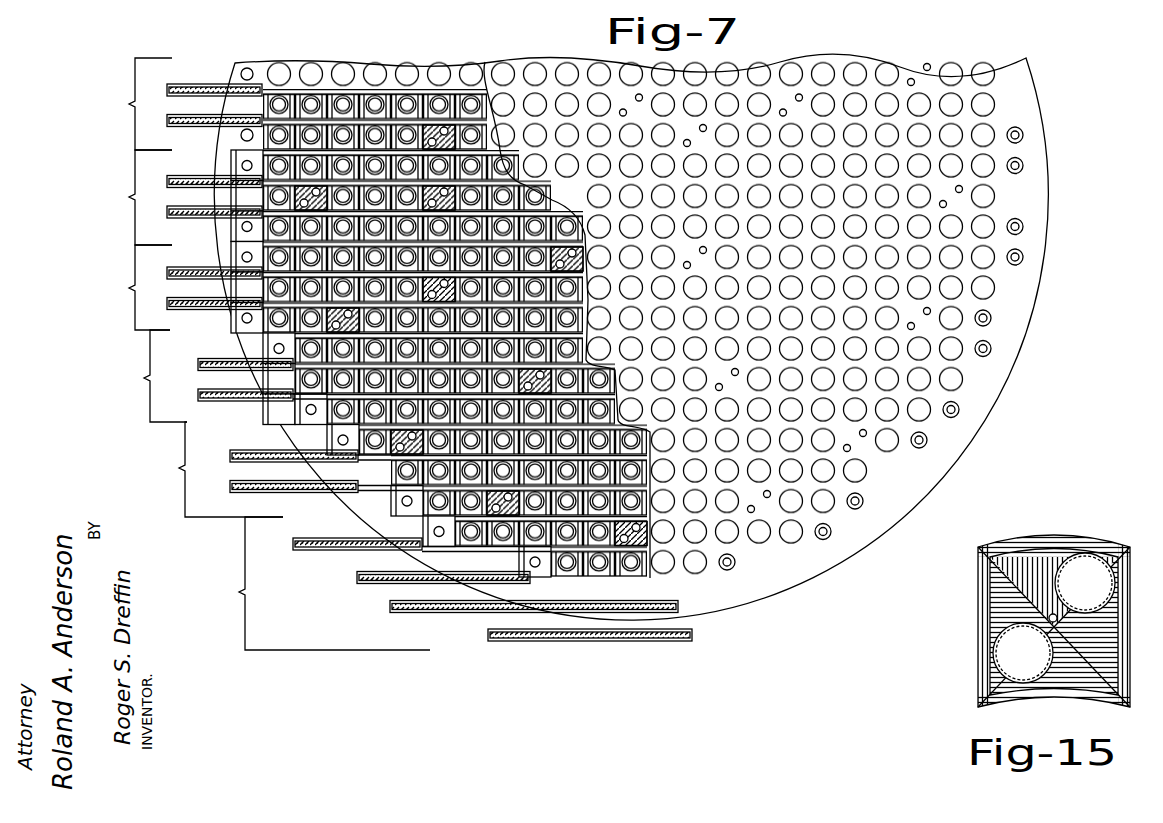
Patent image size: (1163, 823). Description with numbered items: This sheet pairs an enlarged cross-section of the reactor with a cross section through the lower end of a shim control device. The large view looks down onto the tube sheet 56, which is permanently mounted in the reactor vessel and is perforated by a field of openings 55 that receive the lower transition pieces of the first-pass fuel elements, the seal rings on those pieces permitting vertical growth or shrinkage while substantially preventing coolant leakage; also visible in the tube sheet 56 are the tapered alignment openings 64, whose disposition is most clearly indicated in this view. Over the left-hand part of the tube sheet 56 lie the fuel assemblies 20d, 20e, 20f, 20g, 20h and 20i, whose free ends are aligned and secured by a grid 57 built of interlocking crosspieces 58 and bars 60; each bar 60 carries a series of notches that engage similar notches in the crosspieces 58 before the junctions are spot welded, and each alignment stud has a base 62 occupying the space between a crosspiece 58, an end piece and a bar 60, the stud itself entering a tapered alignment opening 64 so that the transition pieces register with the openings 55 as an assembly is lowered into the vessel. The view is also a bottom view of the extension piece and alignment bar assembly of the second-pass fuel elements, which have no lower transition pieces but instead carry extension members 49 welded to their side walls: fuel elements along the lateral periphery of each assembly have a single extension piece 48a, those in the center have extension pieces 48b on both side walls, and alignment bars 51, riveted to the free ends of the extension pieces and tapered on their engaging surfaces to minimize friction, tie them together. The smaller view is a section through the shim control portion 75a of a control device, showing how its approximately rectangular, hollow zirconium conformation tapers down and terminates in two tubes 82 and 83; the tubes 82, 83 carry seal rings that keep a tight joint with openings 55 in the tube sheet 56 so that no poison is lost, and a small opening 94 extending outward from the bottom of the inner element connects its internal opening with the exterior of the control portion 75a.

In FIG. 7, the fuel assembly 20d is at (129, 104).
In FIG. 7, the fuel assembly 20e is at (129, 197).
In FIG. 7, the fuel assembly 20f is at (129, 288).
In FIG. 7, the fuel assembly 20g is at (144, 378).
In FIG. 7, the fuel assembly 20h is at (179, 468).
In FIG. 7, the fuel assembly 20i is at (239, 592).
In FIG. 7, the extension piece 48a is at (272, 448).
In FIG. 7, the extension piece 48b is at (250, 460).
In FIG. 7, the extension member 49 is at (219, 324).
In FIG. 7, the alignment bar 51 is at (330, 520).
In FIG. 7, the opening 55 is at (795, 74).
In FIG. 7, the tube sheet 56 is at (914, 66).
In FIG. 7, the grid 57 is at (217, 247).
In FIG. 7, the crosspiece 58 is at (322, 84).
In FIG. 7, the bar 60 is at (490, 92).
In FIG. 7, the base 62 is at (548, 576).
In FIG. 7, the tapered alignment opening 64 is at (1023, 228).
In FIG. 7, the shim control portion 75a is at (594, 255).
In FIG. 15, the shim control portion 75a is at (1016, 618).
In FIG. 15, the tube 82 is at (1087, 560).
In FIG. 15, the tube 83 is at (1000, 650).
In FIG. 15, the opening 94 is at (1056, 614).